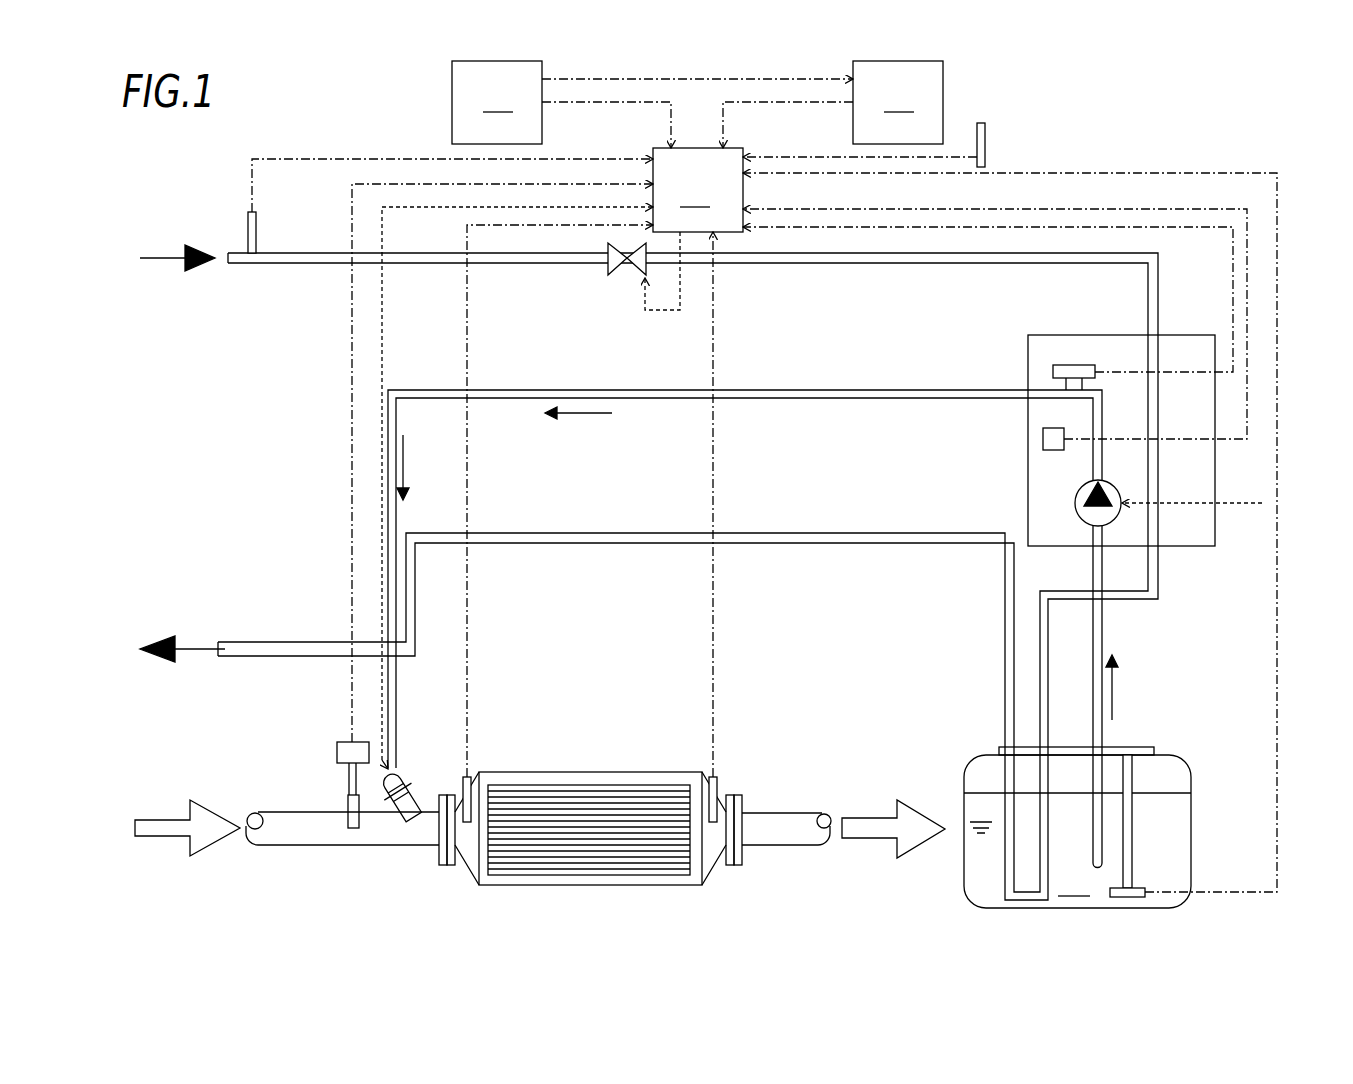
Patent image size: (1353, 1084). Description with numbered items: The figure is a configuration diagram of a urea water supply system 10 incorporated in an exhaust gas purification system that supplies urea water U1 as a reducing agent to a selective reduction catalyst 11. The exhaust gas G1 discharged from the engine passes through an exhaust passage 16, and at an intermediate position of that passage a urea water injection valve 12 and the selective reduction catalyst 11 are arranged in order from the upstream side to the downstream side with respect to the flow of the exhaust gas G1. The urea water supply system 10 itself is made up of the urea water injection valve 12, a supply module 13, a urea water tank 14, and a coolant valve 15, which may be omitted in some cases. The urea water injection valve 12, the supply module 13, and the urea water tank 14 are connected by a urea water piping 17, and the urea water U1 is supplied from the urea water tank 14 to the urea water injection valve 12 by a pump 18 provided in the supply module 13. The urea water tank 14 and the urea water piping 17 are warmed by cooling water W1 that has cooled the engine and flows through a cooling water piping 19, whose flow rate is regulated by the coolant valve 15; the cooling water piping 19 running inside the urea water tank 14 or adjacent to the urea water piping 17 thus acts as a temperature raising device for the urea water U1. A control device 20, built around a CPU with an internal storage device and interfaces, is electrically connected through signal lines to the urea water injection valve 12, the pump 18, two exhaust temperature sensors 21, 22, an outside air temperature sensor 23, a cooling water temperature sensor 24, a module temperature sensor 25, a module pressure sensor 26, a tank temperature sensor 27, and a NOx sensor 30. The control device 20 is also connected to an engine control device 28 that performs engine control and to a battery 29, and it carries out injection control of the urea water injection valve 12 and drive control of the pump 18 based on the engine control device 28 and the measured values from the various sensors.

The urea water supply system 10 is at (818, 364).
The selective reduction catalyst 11 is at (567, 887).
The urea water injection valve 12 is at (400, 830).
The supply module 13 is at (1190, 335).
The urea water tank 14 is at (1191, 848).
The coolant valve 15 is at (620, 276).
The exhaust passage 16 is at (350, 848).
The urea water piping 17 is at (575, 388).
The pump 18 is at (1075, 503).
The cooling water piping 19 is at (542, 268).
The control device 20 is at (697, 167).
The exhaust temperature sensor 21 is at (470, 778).
The exhaust temperature sensor 22 is at (717, 778).
The outside air temperature sensor 23 is at (985, 143).
The cooling water temperature sensor 24 is at (256, 232).
The module temperature sensor 25 is at (1043, 440).
The module pressure sensor 26 is at (1053, 372).
The tank temperature sensor 27 is at (1133, 885).
The engine control device 28 is at (898, 102).
The battery 29 is at (652, 102).
The NOx sensor 30 is at (338, 740).
The cooling water W1 is at (165, 255).
The exhaust gas G1 is at (165, 845).
The urea water U1 is at (406, 462).